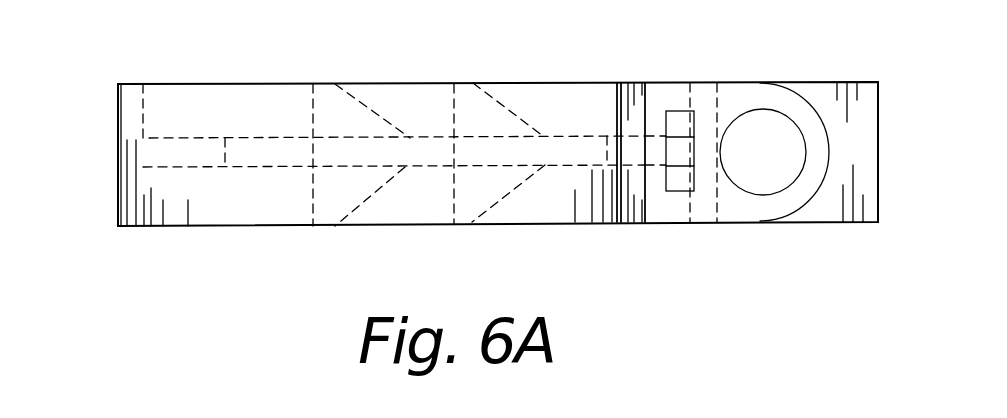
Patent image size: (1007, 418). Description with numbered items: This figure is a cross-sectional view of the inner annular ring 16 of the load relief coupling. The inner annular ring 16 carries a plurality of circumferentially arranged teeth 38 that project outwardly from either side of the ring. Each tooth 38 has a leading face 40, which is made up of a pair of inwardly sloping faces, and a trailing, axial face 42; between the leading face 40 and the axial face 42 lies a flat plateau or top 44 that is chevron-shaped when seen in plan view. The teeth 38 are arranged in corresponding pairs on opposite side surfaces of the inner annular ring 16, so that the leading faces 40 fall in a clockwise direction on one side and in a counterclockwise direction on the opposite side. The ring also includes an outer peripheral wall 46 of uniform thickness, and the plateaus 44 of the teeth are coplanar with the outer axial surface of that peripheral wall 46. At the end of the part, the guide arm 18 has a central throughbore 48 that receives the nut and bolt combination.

The inner annular ring 16 is at (728, 252).
The guide arm 18 is at (822, 90).
The teeth 38 is at (465, 234).
The leading face 40 is at (533, 190).
The trailing axial face 42 is at (455, 190).
The flat plateau 44 is at (322, 84).
The outer peripheral wall 46 is at (128, 107).
The central throughbore 48 is at (782, 178).